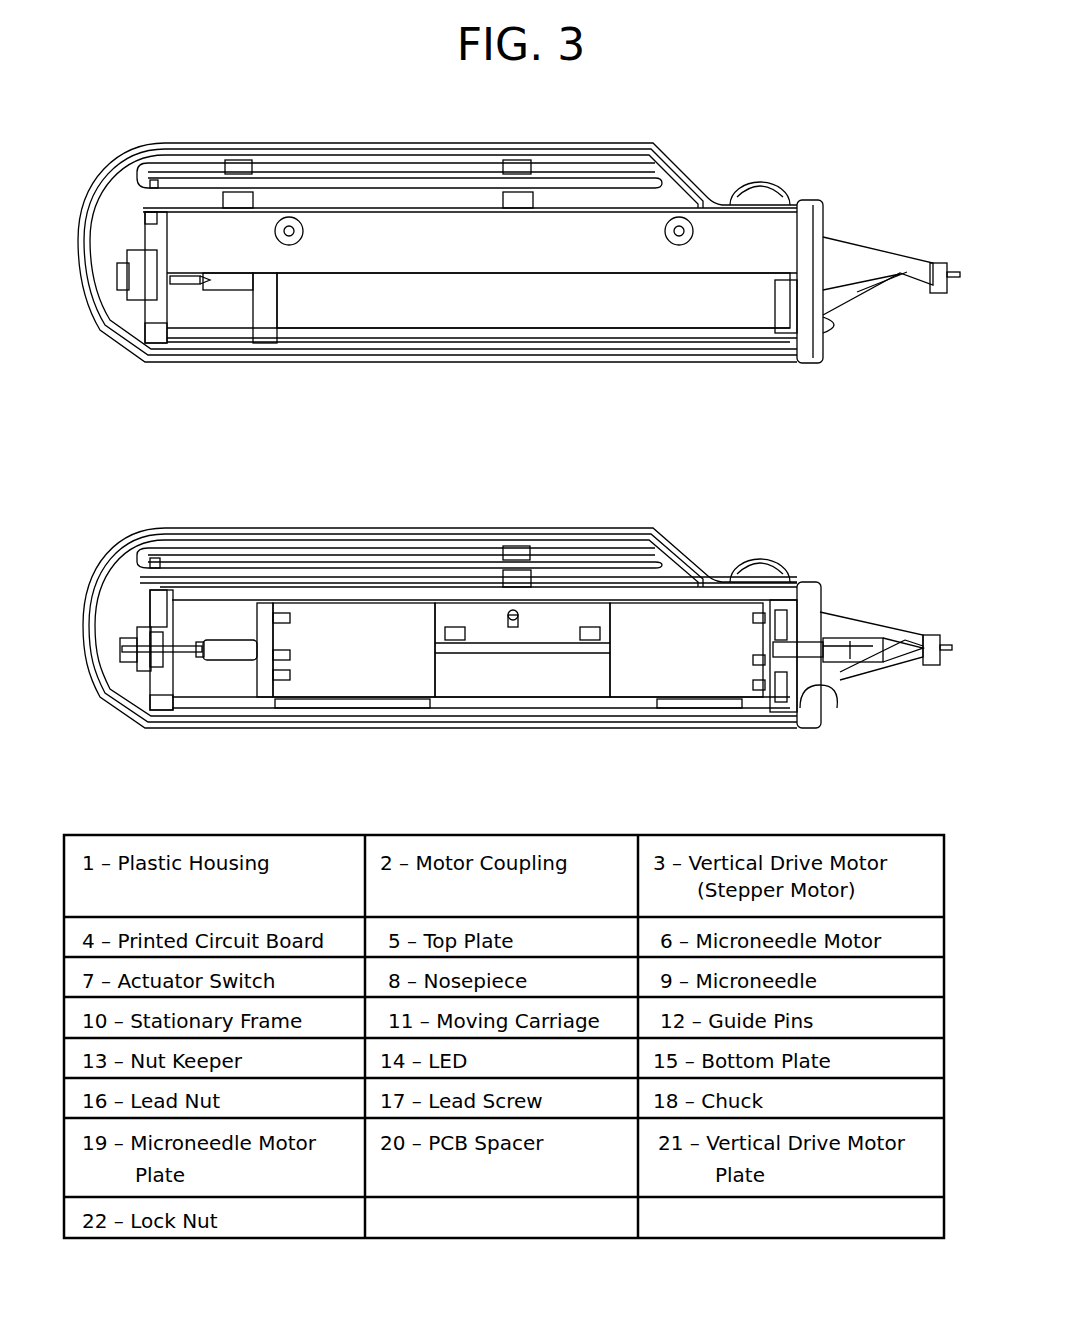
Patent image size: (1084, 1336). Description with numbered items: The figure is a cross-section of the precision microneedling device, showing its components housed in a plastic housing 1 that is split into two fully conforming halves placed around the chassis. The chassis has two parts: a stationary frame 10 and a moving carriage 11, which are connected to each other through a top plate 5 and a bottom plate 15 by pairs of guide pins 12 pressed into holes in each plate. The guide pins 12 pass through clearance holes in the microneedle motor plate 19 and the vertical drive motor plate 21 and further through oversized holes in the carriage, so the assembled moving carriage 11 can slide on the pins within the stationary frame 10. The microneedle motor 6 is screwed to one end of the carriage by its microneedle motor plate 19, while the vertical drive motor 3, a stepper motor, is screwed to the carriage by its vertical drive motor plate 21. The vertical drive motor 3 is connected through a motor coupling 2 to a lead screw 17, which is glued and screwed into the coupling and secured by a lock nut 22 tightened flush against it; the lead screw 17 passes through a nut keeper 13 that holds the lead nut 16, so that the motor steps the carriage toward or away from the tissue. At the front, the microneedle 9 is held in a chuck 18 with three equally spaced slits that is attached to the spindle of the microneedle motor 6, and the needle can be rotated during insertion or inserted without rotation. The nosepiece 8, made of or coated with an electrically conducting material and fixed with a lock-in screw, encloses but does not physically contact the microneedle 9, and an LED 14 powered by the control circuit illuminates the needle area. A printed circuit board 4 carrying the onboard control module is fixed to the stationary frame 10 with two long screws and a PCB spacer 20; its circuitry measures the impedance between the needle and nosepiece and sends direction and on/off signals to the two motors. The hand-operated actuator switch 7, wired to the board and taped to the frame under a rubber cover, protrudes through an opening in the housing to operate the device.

The plastic housing 1 is at (93, 328).
The motor coupling 2 is at (218, 300).
The vertical drive motor 3 is at (335, 640).
The printed circuit board 4 is at (380, 195).
The top plate 5 is at (147, 235).
The microneedle motor 6 is at (633, 622).
The actuator switch 7 is at (745, 170).
The nosepiece 8 is at (858, 297).
The microneedle 9 is at (950, 290).
The stationary frame 10 is at (203, 240).
The moving carriage 11 is at (445, 300).
The guide pins 12 is at (330, 705).
The nut keeper 13 is at (140, 295).
The LED 14 is at (842, 690).
The bottom plate 15 is at (822, 308).
The lead nut 16 is at (150, 665).
The lead screw 17 is at (178, 645).
The chuck 18 is at (868, 655).
The microneedle motor plate 19 is at (787, 287).
The PCB spacer 20 is at (523, 190).
The vertical drive motor plate 21 is at (268, 305).
The lock nut 22 is at (197, 670).